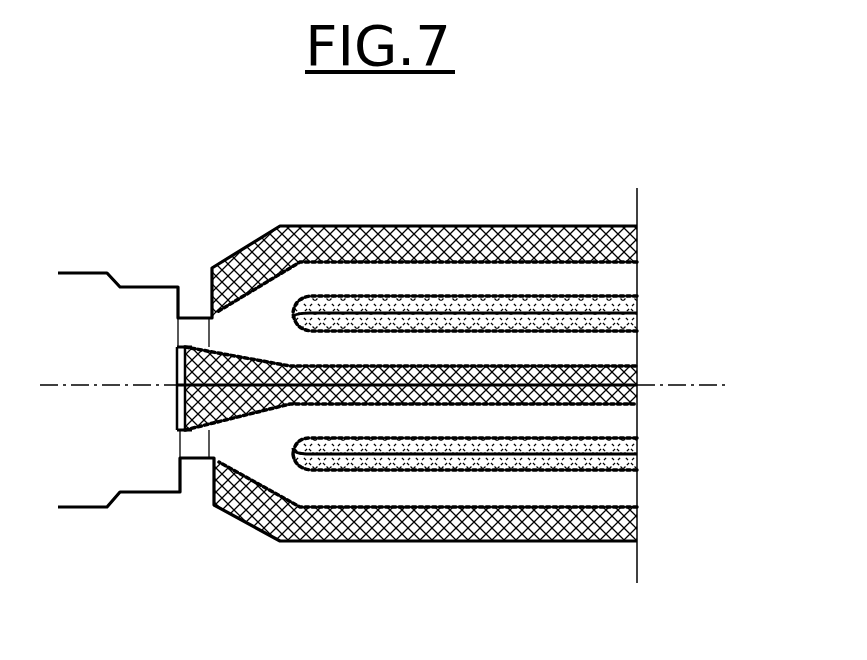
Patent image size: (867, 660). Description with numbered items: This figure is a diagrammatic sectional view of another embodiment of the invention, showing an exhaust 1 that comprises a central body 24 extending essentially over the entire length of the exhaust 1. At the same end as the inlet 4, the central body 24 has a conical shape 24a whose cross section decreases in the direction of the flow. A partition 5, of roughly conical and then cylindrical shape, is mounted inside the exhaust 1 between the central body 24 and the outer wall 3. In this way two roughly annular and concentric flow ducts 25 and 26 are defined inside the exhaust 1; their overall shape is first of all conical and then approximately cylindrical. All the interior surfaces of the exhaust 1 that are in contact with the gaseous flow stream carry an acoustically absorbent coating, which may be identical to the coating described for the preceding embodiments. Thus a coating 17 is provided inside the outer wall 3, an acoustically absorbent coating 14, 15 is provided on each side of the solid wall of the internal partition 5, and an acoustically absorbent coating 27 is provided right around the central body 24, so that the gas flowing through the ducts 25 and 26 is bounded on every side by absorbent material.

The exhaust 1 is at (228, 228).
The outer wall 3 is at (387, 224).
The inlet 4 is at (193, 332).
The partition 5 is at (452, 313).
The acoustically absorbent coating 14 is at (623, 300).
The acoustically absorbent coating 15 is at (617, 318).
The coating 17 is at (577, 245).
The central body 24 is at (500, 360).
The conical shape 24a is at (248, 418).
The flow duct 25 is at (330, 350).
The flow duct 26 is at (373, 280).
The acoustically absorbent coating 27 is at (538, 372).